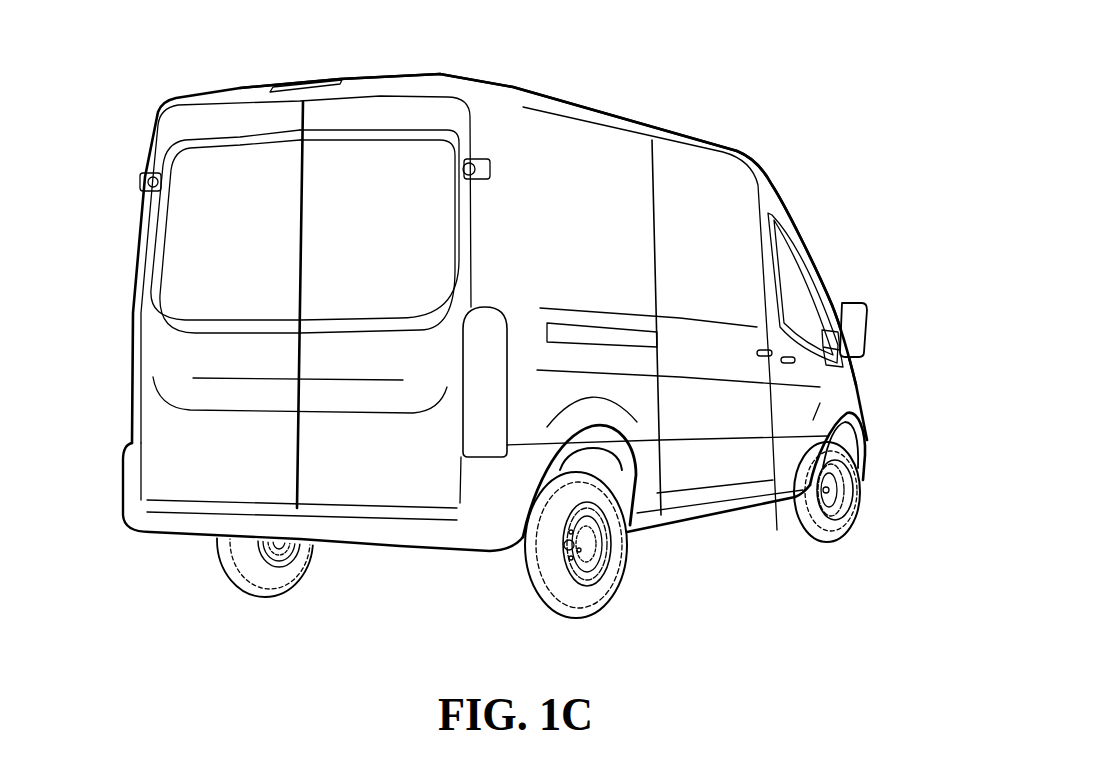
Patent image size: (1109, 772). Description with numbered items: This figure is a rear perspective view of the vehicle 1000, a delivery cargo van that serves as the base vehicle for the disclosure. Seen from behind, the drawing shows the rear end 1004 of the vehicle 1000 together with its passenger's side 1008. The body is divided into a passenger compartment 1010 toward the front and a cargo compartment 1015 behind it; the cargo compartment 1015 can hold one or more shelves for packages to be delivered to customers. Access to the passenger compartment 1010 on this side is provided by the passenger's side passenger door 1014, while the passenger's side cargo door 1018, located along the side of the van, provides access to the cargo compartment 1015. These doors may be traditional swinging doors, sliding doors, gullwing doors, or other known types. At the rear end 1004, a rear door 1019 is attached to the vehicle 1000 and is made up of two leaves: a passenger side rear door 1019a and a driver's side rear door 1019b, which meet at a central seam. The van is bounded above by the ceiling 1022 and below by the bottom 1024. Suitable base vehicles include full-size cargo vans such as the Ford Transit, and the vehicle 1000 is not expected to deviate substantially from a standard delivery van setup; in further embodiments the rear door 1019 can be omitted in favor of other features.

The vehicle 1000 is at (103, 232).
The rear end 1004 is at (170, 534).
The passenger's side 1008 is at (757, 503).
The passenger compartment 1010 is at (803, 240).
The passenger's side passenger door 1014 is at (810, 413).
The cargo compartment 1015 is at (517, 87).
The passenger's side cargo door 1018 is at (733, 347).
The rear door 1019 is at (292, 433).
The passenger side rear door 1019a is at (353, 397).
The driver's side rear door 1019b is at (247, 370).
The ceiling 1022 is at (400, 73).
The bottom 1024 is at (673, 522).